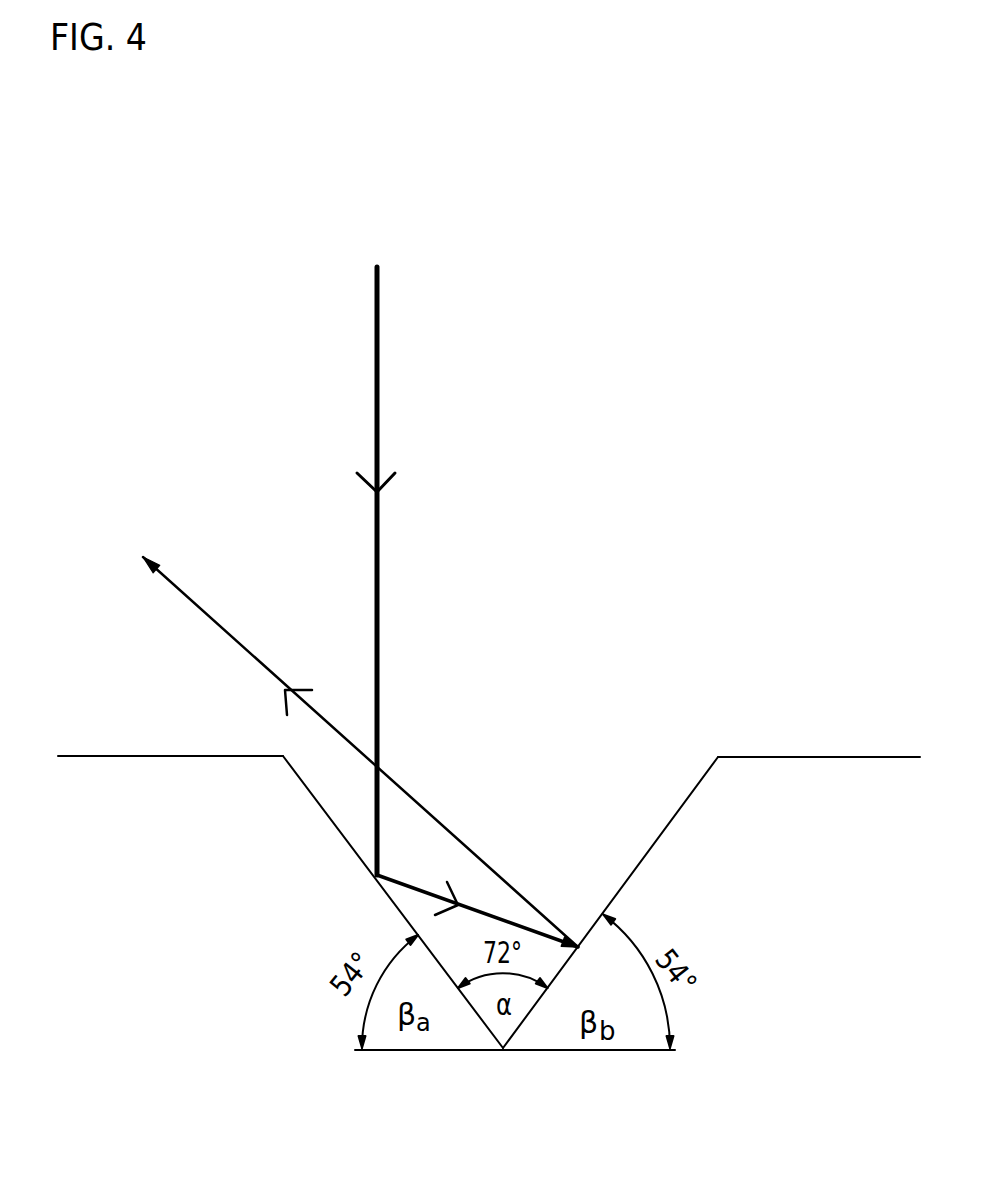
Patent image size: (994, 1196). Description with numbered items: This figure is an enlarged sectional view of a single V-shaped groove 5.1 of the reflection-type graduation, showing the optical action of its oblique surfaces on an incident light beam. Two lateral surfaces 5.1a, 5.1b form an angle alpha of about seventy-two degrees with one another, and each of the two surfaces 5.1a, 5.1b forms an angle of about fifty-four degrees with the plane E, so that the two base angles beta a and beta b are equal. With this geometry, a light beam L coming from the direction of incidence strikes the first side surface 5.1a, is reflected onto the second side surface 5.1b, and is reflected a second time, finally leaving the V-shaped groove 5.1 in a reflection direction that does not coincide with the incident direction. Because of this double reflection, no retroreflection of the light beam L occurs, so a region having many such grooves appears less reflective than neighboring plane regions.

The V-shaped groove 5.1 is at (489, 827).
The first lateral surface 5.1a is at (330, 817).
The second lateral surface 5.1b is at (668, 828).
The light beam L is at (378, 442).
The plane E is at (593, 1050).